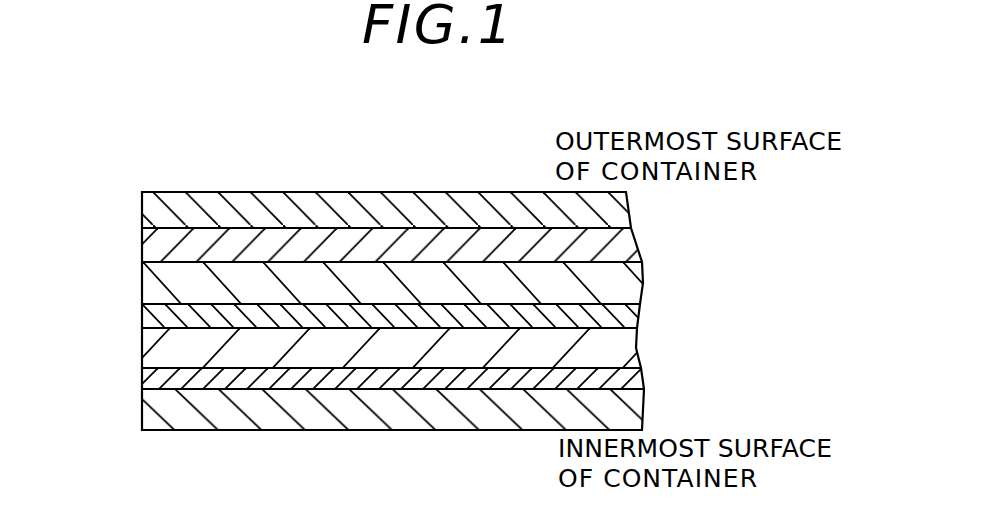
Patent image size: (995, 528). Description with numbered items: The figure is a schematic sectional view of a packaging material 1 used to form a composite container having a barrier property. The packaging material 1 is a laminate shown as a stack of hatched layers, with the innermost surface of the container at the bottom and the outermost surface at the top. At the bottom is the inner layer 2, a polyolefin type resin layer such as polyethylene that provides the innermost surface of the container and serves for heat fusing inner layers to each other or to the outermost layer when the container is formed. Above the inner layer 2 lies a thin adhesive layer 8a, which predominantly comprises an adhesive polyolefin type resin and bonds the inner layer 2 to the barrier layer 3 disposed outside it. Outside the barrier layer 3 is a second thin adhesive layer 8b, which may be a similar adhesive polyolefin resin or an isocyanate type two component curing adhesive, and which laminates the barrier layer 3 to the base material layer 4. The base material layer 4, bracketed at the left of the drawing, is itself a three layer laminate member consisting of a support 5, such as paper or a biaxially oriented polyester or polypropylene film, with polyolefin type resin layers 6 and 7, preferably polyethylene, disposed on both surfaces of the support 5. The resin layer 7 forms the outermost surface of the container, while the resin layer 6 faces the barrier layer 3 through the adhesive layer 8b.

The packaging material 1 is at (515, 148).
The inner layer 2 is at (175, 408).
The barrier layer 3 is at (143, 343).
The base material layer 4 is at (72, 192).
The support 5 is at (142, 245).
The resin layer 6 is at (142, 283).
The resin layer 7 is at (142, 205).
The adhesive layer 8a is at (146, 376).
The adhesive layer 8b is at (146, 310).